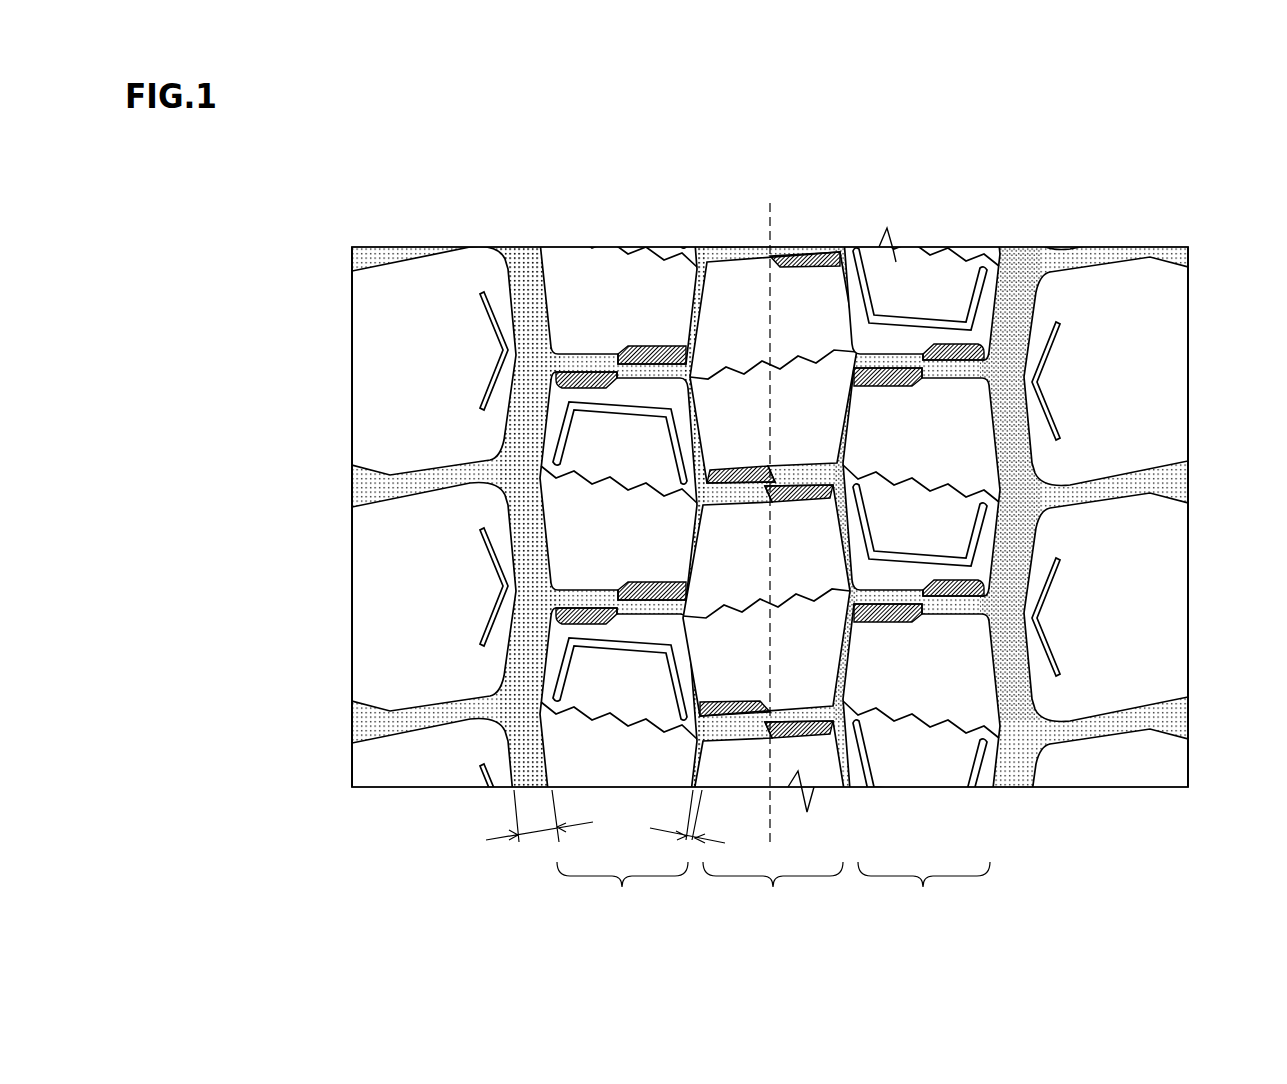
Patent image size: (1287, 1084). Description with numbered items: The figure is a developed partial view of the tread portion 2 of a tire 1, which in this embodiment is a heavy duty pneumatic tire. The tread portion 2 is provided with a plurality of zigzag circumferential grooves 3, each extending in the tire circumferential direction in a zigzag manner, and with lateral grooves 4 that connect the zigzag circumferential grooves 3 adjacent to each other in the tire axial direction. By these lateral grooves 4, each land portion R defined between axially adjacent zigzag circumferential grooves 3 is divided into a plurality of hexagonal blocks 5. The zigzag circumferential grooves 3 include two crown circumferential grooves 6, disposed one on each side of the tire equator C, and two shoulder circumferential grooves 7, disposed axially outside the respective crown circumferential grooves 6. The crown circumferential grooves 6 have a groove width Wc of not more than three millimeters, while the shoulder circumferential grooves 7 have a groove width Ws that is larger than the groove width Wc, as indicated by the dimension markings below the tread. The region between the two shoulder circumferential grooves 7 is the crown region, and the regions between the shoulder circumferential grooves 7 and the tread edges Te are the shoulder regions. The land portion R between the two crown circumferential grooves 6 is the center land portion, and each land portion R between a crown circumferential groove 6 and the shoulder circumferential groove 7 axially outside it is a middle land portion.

The tire 1 is at (1234, 213).
The tread portion 2 is at (1198, 195).
The zigzag circumferential grooves 3 is at (770, 468).
The lateral grooves 4 is at (598, 366).
The hexagonal blocks 5 is at (814, 421).
The crown circumferential grooves 6 is at (700, 275).
The shoulder circumferential grooves 7 is at (523, 265).
The tire equator C is at (770, 510).
The tread edges Te is at (352, 312).
The groove width of shoulder circumferential grooves Ws is at (533, 832).
The groove width of crown circumferential grooves Wc is at (690, 836).
The land portion R is at (773, 889).